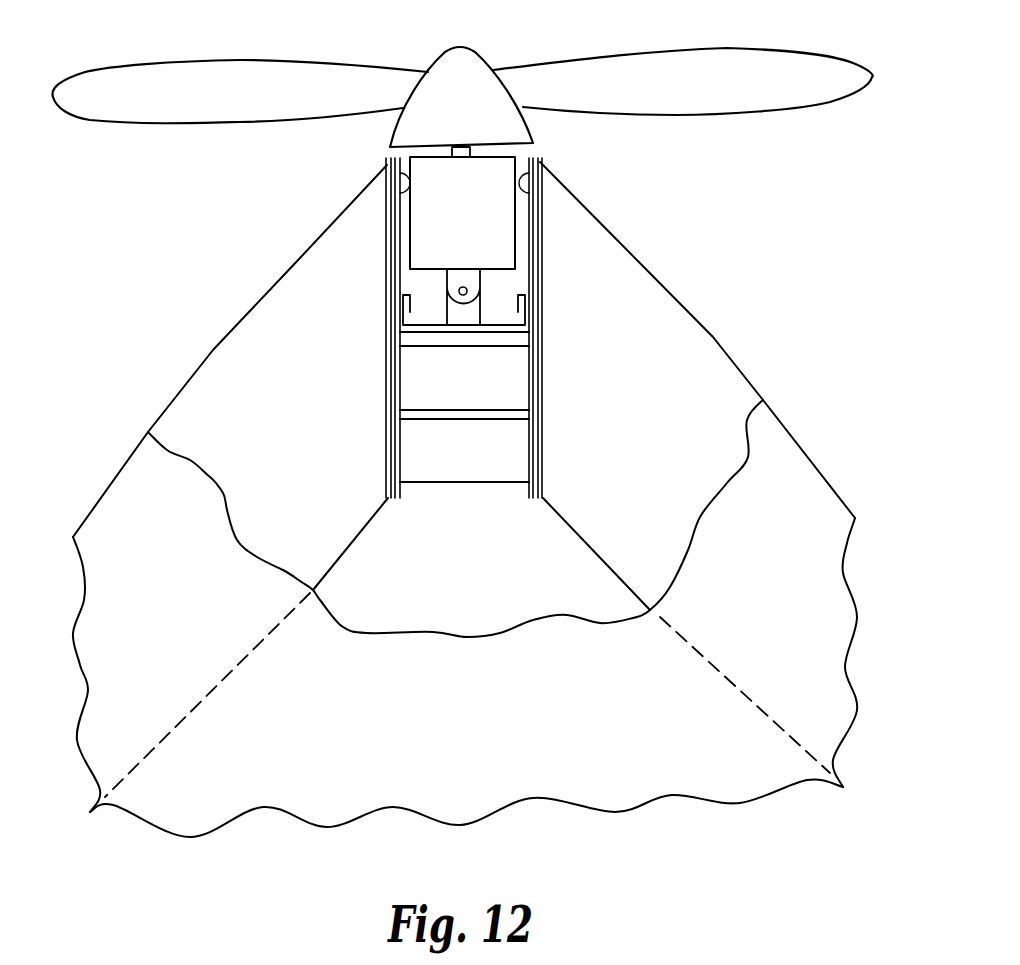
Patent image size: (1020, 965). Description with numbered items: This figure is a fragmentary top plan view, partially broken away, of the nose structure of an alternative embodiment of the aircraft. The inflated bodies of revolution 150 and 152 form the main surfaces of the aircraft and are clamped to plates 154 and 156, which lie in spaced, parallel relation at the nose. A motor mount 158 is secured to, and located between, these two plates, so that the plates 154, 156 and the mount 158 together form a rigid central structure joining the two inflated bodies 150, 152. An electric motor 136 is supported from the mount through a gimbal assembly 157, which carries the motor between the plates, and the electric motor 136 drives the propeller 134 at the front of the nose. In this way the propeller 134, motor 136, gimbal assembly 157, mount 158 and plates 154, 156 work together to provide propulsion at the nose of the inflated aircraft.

The propeller 134 is at (617, 63).
The electric motor 136 is at (493, 224).
The inflated body of revolution 150 is at (702, 347).
The inflated body of revolution 152 is at (227, 353).
The plate 154 is at (540, 163).
The plate 156 is at (387, 165).
The gimbal assembly 157 is at (473, 282).
The motor mount 158 is at (508, 377).